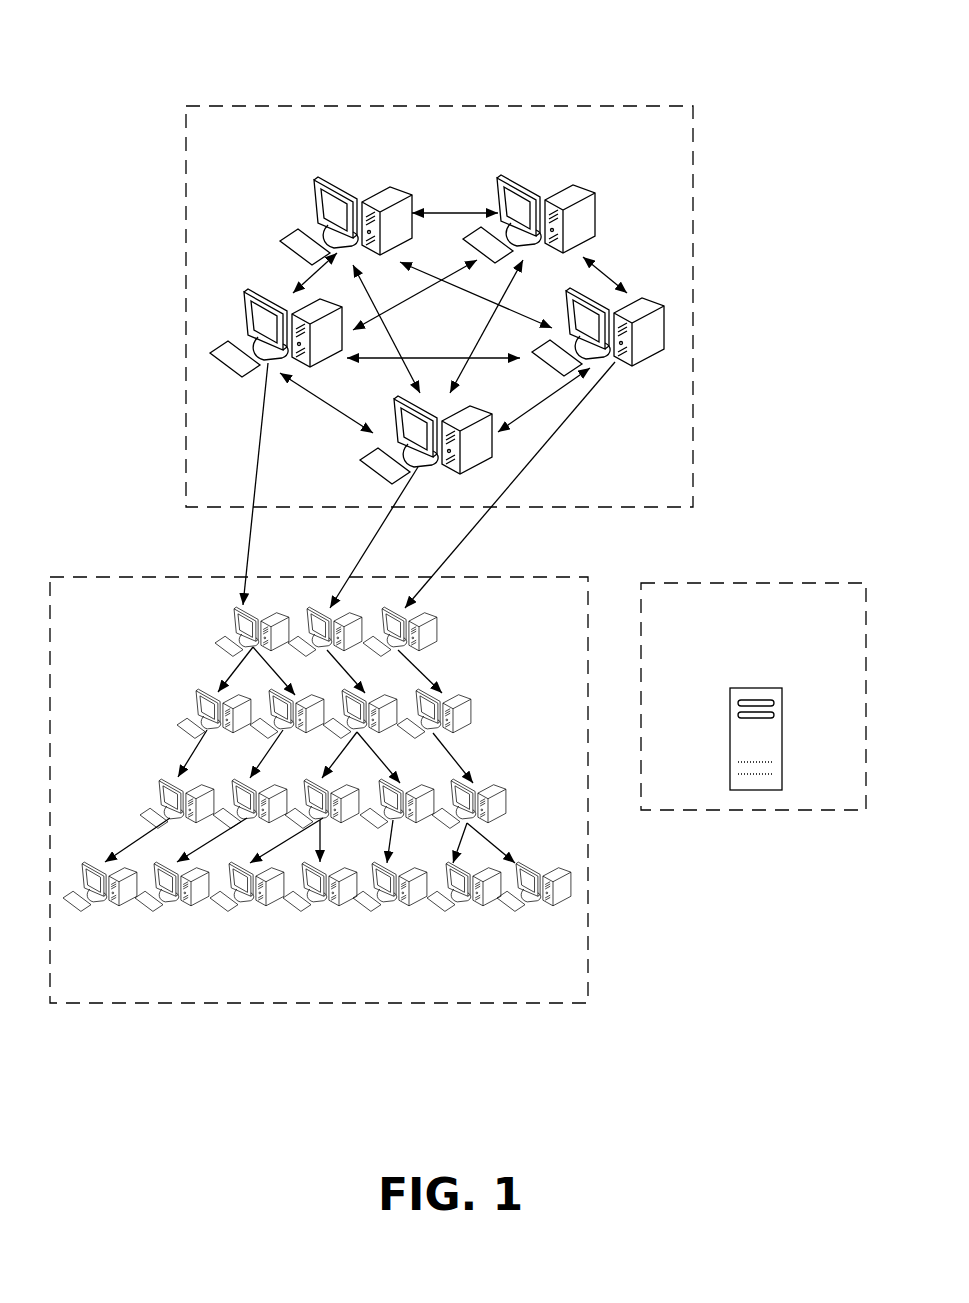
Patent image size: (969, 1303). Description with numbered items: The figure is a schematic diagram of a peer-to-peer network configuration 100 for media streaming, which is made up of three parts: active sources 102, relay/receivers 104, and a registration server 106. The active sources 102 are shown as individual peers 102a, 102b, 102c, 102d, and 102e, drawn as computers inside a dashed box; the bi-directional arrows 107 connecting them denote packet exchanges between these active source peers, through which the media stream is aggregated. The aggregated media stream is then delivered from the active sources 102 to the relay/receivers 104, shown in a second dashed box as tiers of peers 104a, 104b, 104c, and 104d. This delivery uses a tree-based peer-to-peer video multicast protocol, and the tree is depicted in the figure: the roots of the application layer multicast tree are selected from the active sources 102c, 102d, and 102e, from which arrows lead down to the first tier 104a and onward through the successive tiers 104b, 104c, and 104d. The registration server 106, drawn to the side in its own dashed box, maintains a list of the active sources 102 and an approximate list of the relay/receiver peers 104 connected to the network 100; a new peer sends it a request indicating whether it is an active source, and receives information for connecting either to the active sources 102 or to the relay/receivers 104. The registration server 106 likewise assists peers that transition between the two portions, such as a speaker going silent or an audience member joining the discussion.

The peer-to-peer network configuration 100 is at (278, 98).
The active sources 102 is at (455, 158).
The active source peer 102a is at (314, 204).
The active source peer 102b is at (586, 194).
The active source peer 102c is at (622, 296).
The active source peer 102d is at (360, 462).
The active source peer 102e is at (246, 294).
The relay/receivers 104 is at (327, 980).
The relay/receiver peer 104a is at (223, 642).
The relay/receiver peer 104b is at (197, 718).
The relay/receiver peer 104c is at (157, 812).
The relay/receiver peer 104d is at (70, 895).
The registration server 106 is at (773, 666).
The bi-directional arrows 107 is at (444, 212).